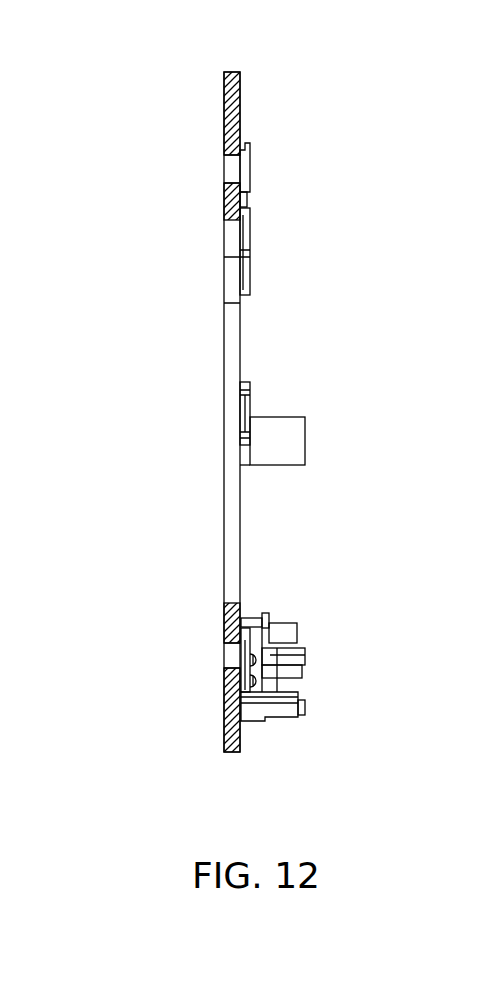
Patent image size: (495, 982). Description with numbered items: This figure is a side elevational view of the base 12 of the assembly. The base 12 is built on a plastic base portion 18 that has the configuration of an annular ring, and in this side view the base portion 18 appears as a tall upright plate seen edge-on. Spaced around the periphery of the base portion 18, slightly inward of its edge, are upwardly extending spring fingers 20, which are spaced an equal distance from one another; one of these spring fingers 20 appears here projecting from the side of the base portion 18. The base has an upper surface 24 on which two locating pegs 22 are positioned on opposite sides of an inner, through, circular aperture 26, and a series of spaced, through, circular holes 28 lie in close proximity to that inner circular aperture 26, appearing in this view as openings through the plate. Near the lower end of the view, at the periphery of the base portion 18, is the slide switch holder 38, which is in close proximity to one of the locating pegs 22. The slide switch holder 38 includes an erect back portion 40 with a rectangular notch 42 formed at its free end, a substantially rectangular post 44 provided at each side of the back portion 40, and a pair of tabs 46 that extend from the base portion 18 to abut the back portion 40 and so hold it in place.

The base 12 is at (222, 76).
The base portion 18 is at (233, 753).
The spring fingers 20 is at (307, 430).
The locating pegs 22 is at (264, 613).
The upper surface 24 is at (242, 106).
The inner circular aperture 26 is at (232, 356).
The circular holes 28 is at (228, 170).
The slide switch holder 38 is at (307, 717).
The back portion 40 is at (305, 653).
The rectangular notch 42 is at (295, 682).
The post 44 is at (293, 623).
The tabs 46 is at (257, 665).